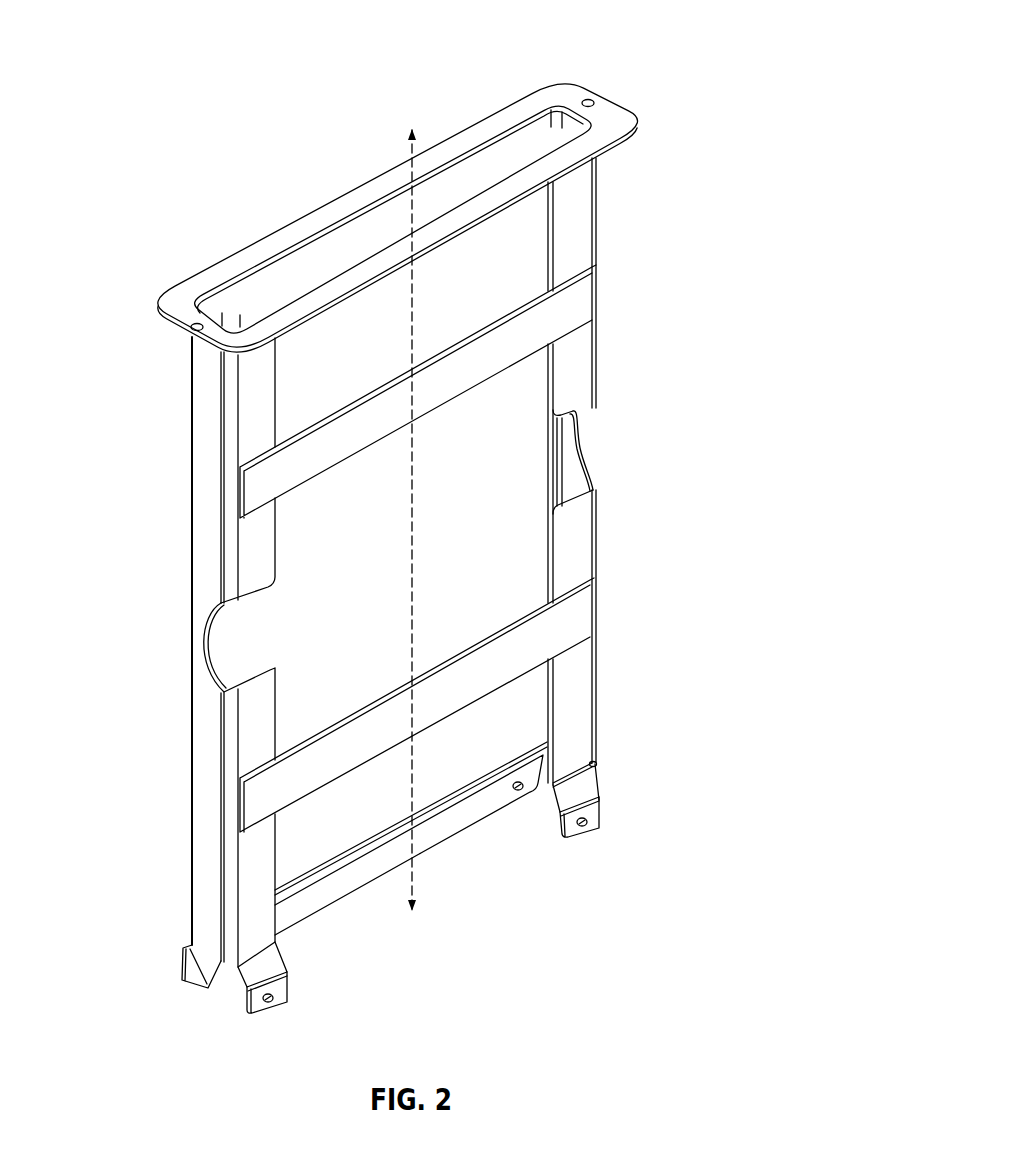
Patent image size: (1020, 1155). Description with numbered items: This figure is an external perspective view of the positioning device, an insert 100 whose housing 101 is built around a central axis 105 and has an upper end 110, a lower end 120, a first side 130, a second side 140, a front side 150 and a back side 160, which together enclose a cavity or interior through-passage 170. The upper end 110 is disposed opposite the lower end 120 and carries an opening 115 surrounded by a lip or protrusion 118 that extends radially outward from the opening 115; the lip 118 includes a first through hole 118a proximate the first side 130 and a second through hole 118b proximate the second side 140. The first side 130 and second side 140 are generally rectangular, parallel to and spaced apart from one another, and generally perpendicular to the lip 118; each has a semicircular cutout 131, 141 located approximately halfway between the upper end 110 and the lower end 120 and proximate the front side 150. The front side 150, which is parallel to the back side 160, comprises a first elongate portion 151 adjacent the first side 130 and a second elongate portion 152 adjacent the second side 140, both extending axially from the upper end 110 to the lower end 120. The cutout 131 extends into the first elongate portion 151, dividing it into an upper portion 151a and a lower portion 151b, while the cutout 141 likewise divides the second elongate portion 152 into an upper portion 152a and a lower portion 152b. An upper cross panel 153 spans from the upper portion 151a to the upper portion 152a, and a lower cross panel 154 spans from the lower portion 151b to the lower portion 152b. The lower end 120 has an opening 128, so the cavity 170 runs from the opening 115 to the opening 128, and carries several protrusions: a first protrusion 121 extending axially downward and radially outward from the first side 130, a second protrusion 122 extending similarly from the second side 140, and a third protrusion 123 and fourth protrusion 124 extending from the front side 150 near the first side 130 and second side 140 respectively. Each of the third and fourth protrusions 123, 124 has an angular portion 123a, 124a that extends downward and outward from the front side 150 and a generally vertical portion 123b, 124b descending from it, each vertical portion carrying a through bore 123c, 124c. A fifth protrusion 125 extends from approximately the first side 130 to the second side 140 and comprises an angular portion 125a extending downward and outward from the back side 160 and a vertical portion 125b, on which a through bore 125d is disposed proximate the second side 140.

The insert 100 is at (212, 188).
The housing 101 is at (648, 250).
The central axis 105 is at (408, 168).
The upper end 110 is at (569, 74).
The opening 115 is at (272, 296).
The lip or protrusion 118 is at (630, 128).
The first through hole 118a is at (190, 335).
The second through hole 118b is at (598, 104).
The lower end 120 is at (609, 783).
The first protrusion 121 is at (186, 964).
The second protrusion 122 is at (598, 764).
The third protrusion 123 is at (238, 1004).
The angular portion 123a is at (264, 975).
The vertical portion 123b is at (284, 988).
The through bore 123c is at (272, 1004).
The fourth protrusion 124 is at (665, 839).
The angular portion 124a is at (594, 788).
The vertical portion 124b is at (568, 832).
The through bore 124c is at (600, 823).
The fifth protrusion 125 is at (394, 878).
The angular portion 125a is at (455, 810).
The vertical portion 125b is at (352, 878).
The through bore 125d is at (522, 792).
The opening 128 is at (427, 871).
The first side 130 is at (207, 479).
The cutout 131 is at (230, 652).
The second side 140 is at (611, 549).
The cutout 141 is at (593, 437).
The front side 150 is at (585, 565).
The first elongate portion 151 is at (224, 591).
The upper portion 151a is at (253, 430).
The lower portion 151b is at (256, 916).
The second elongate portion 152 is at (605, 381).
The upper portion 152a is at (590, 362).
The lower portion 152b is at (583, 680).
The upper cross panel 153 is at (572, 318).
The lower cross panel 154 is at (582, 612).
The back side 160 is at (192, 805).
The cavity or interior through-passage 170 is at (514, 237).